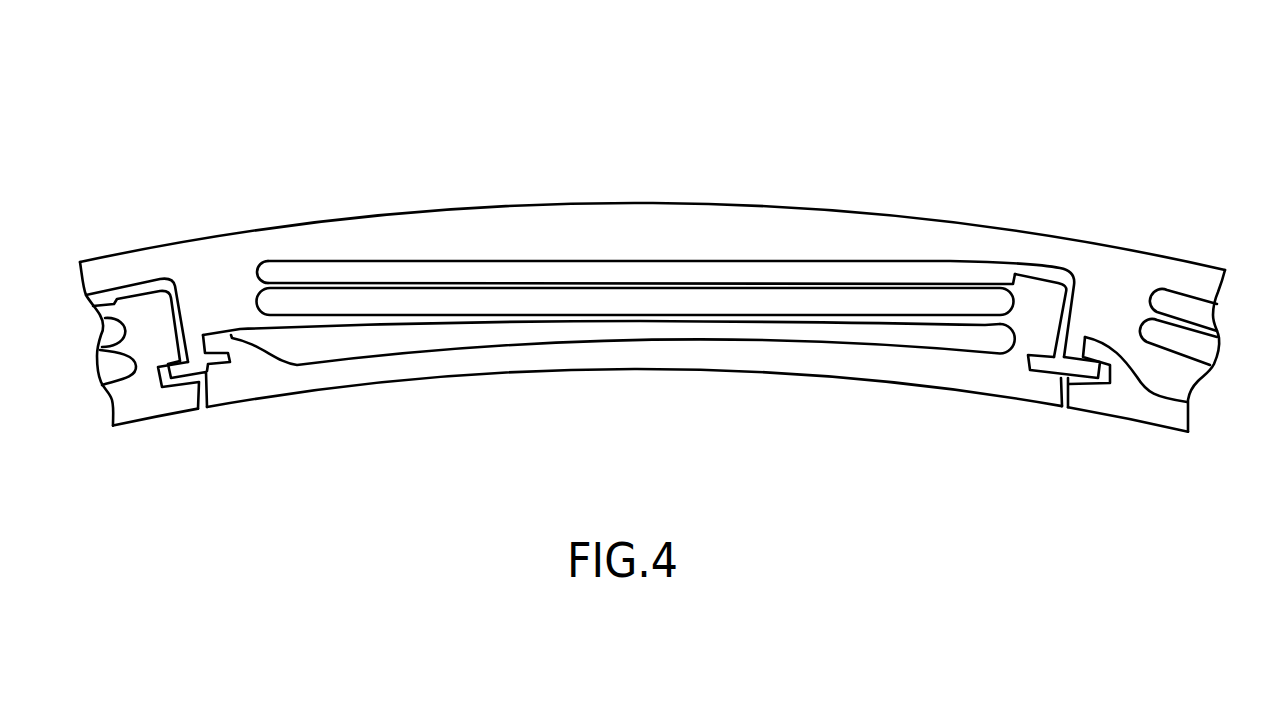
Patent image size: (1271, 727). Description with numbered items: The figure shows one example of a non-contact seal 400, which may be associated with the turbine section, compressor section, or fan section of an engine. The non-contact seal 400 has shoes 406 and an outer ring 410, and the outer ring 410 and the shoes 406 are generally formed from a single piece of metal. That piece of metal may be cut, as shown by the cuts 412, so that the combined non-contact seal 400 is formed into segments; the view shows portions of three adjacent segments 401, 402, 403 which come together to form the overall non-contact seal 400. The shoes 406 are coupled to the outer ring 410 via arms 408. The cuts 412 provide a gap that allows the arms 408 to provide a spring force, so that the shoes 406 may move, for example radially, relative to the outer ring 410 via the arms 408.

The non-contact seal 400 is at (918, 122).
The segment 401 is at (183, 398).
The segment 402 is at (547, 355).
The segment 403 is at (1160, 415).
The shoes 406 is at (147, 408).
The arms 408 is at (593, 316).
The outer ring 410 is at (213, 254).
The cuts 412 is at (393, 323).